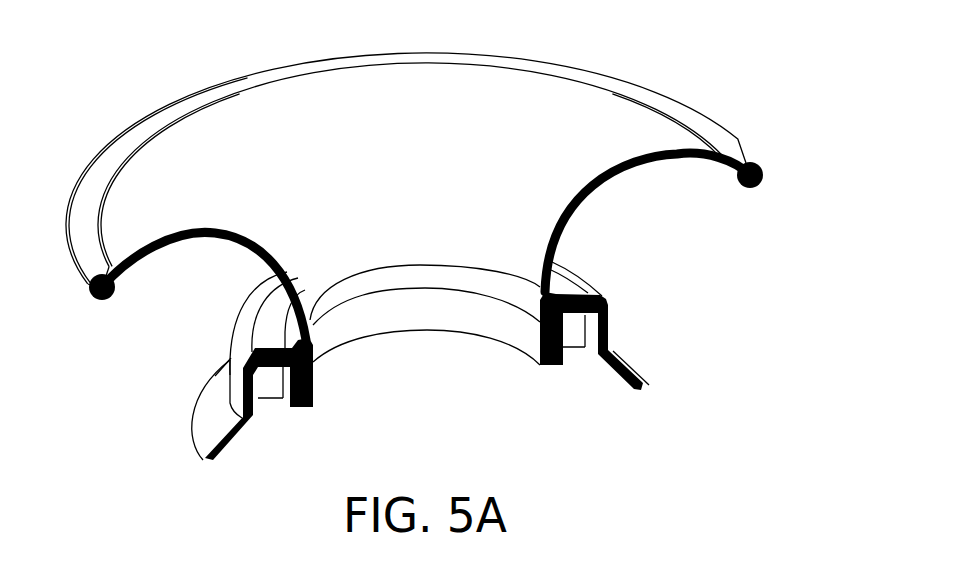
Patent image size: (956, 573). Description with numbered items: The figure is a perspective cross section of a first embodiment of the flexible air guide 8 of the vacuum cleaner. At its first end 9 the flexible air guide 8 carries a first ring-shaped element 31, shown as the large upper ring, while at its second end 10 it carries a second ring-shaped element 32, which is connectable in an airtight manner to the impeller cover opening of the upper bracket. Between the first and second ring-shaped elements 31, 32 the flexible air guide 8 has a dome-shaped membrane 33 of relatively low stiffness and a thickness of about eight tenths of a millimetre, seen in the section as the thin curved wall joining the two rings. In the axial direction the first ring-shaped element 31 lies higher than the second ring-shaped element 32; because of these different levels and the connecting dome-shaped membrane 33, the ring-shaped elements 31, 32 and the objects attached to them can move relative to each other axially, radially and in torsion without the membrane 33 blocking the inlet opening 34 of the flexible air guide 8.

The flexible air guide 8 is at (457, 235).
The first end 9 is at (753, 191).
The second end 10 is at (573, 338).
The first ring-shaped element 31 is at (765, 172).
The second ring-shaped element 32 is at (610, 317).
The dome-shaped membrane 33 is at (601, 185).
The inlet opening 34 is at (425, 343).